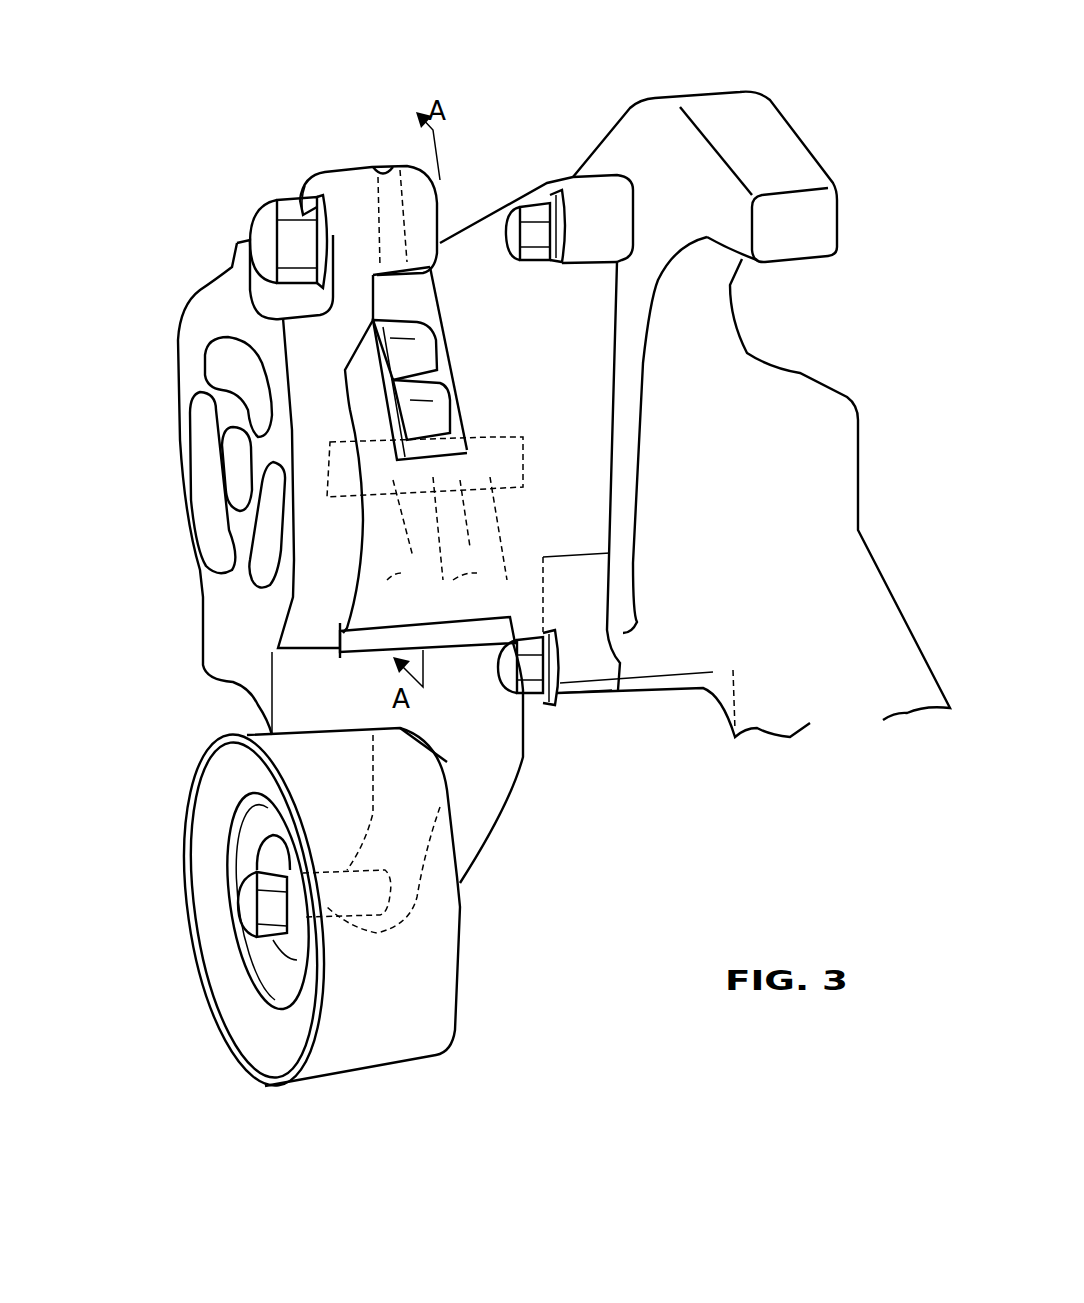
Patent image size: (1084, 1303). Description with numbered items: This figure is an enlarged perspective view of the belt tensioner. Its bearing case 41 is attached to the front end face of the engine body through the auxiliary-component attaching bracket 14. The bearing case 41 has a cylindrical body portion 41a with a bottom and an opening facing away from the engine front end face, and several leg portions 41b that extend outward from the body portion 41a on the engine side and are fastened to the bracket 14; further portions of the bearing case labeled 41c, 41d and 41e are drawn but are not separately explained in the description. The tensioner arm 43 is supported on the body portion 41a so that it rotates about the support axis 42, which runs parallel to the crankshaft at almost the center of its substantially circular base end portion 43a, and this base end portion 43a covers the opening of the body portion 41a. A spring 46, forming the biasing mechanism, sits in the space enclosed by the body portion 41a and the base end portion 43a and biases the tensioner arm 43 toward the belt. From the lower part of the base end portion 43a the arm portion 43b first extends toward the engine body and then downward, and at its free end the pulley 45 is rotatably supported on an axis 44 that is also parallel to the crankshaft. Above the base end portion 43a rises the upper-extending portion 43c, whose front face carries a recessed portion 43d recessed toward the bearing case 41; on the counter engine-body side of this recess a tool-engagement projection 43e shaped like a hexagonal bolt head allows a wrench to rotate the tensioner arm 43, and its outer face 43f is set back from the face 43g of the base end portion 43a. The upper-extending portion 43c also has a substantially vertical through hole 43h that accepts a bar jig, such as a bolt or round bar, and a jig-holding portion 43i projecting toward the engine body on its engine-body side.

The auxiliary-component attaching bracket 14 is at (670, 138).
The bearing case 41 is at (566, 454).
The cylindrical body portion 41a is at (445, 590).
The leg portions 41b is at (480, 220).
The plate portion 41c is at (403, 303).
The rib 41d is at (406, 351).
The rib 41e is at (413, 416).
The support axis 42 is at (545, 632).
The tensioner arm 43 is at (162, 512).
The base end portion 43a is at (177, 383).
The arm portion 43b is at (493, 827).
The upper-extending portion 43c is at (340, 293).
The recessed portion 43d is at (306, 193).
The tool-engagement projection 43e is at (327, 247).
The face of tool-engagement projection 43f is at (262, 233).
The face of base end portion 43g is at (228, 590).
The through hole 43h is at (388, 165).
The jig-holding portion 43i is at (341, 163).
The axis 44 is at (333, 915).
The pulley 45 is at (373, 1063).
The spring 46 is at (350, 540).